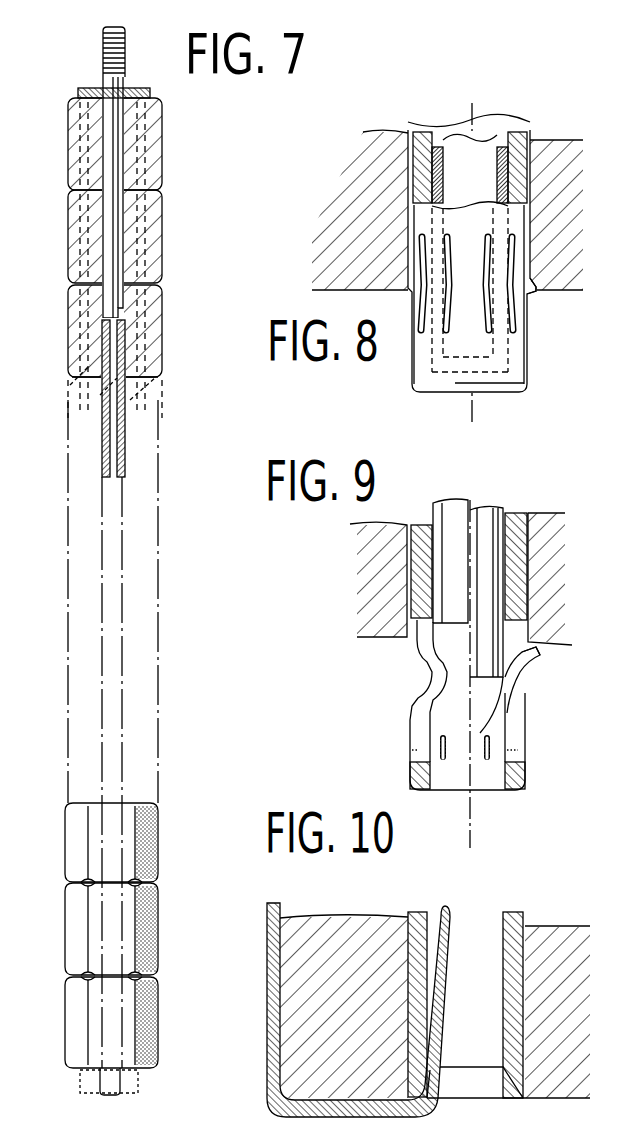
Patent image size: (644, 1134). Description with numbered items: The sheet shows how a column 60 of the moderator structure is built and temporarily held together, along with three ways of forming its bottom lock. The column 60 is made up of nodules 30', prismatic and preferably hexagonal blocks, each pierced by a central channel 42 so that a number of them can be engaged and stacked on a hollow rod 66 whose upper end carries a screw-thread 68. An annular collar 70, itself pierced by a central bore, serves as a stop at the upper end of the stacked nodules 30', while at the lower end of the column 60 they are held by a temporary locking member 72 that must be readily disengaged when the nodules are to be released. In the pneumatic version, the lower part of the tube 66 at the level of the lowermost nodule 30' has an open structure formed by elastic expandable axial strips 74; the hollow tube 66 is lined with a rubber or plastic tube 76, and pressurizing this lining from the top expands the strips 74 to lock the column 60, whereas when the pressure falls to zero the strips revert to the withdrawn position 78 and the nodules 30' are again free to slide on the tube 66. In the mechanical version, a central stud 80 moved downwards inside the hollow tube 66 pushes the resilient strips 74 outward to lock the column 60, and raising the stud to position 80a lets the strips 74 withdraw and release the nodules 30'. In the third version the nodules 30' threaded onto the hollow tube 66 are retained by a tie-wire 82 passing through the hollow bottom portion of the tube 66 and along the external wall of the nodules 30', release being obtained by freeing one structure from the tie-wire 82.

In FIG. 7, the nodule 30' is at (94, 258).
In FIG. 8, the nodule 30' is at (447, 210).
In FIG. 9, the nodule 30' is at (447, 579).
In FIG. 10, the nodule 30' is at (435, 991).
In FIG. 7, the central channel 42 is at (108, 252).
In FIG. 7, the column 60 is at (62, 411).
In FIG. 7, the hollow rod 66 is at (108, 306).
In FIG. 8, the hollow rod 66 is at (421, 178).
In FIG. 9, the hollow rod 66 is at (518, 517).
In FIG. 10, the hollow rod 66 is at (515, 913).
In FIG. 7, the screw-thread 68 is at (103, 48).
In FIG. 7, the annular collar 70 is at (78, 92).
In FIG. 7, the temporary locking member 72 is at (143, 1082).
In FIG. 8, the temporary locking member 72 is at (531, 364).
In FIG. 9, the temporary locking member 72 is at (389, 745).
In FIG. 8, the expandable axial strips 74 is at (535, 290).
In FIG. 9, the expandable axial strips 74 is at (532, 658).
In FIG. 8, the rubber or plastic tube 76 is at (433, 152).
In FIG. 8, the withdrawn position 78 is at (411, 285).
In FIG. 9, the central stud 80 is at (488, 678).
In FIG. 9, the raised stud position 80a is at (457, 640).
In FIG. 10, the tie-wire 82 is at (442, 930).